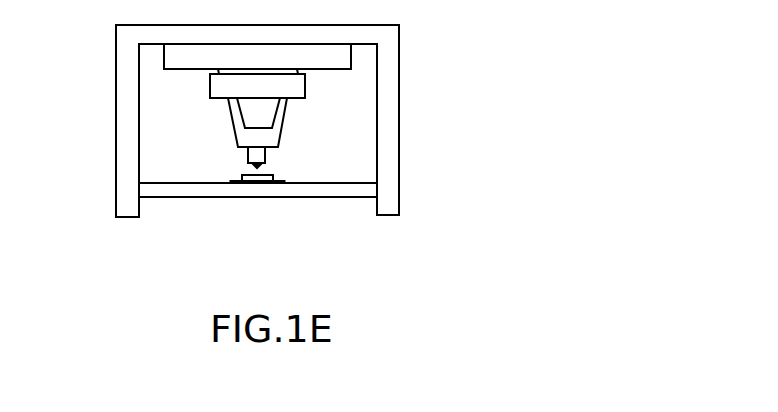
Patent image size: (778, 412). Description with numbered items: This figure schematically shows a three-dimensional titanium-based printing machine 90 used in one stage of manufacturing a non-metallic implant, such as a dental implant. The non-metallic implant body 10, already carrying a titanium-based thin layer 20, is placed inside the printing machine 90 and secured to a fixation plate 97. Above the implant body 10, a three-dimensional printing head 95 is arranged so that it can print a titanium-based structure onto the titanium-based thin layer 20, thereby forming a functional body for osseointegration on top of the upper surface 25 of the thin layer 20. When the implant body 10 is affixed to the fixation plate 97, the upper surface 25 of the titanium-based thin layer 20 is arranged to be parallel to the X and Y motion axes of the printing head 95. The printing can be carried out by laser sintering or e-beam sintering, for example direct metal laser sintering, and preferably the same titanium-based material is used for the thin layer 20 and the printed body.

The non-metallic implant body 10 is at (345, 149).
The titanium-based thin layer 20 is at (280, 173).
The upper surface of titanium-based thin layer 25 is at (270, 172).
The 3D titanium-based printing machine 90 is at (412, 68).
The 3D printing head 95 is at (222, 127).
The fixation plate 97 is at (318, 188).